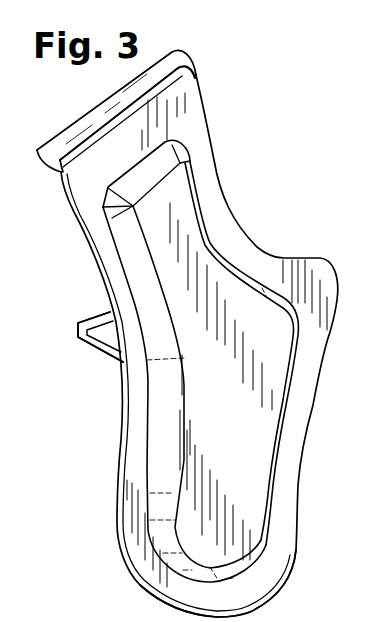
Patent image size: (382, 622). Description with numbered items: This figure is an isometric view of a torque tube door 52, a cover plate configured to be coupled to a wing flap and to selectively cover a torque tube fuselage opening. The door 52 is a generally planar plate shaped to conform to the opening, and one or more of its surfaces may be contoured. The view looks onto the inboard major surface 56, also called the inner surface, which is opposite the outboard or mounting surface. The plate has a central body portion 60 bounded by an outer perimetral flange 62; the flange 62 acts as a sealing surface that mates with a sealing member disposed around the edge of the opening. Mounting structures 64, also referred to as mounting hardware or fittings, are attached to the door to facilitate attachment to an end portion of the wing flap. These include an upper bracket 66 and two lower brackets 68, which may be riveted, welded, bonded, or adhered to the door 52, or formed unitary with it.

The torque tube door 52 is at (246, 165).
The inboard major surface 56 is at (252, 460).
The central body portion 60 is at (236, 414).
The outer perimetral flange 62 is at (263, 588).
The mounting structure 64 is at (98, 358).
The upper bracket 66 is at (82, 127).
The lower bracket 68 is at (110, 313).